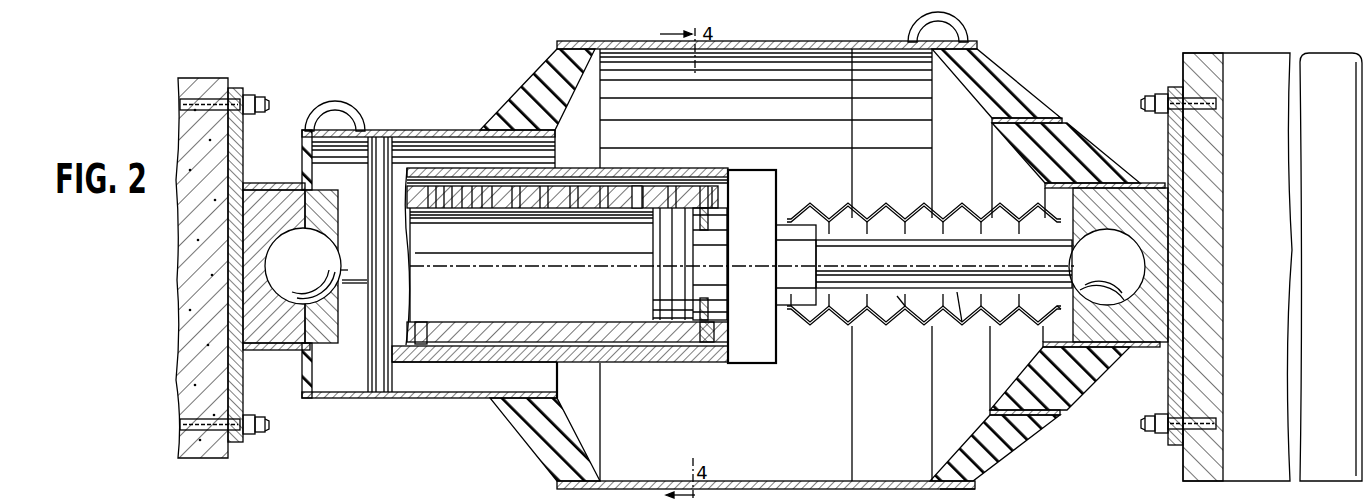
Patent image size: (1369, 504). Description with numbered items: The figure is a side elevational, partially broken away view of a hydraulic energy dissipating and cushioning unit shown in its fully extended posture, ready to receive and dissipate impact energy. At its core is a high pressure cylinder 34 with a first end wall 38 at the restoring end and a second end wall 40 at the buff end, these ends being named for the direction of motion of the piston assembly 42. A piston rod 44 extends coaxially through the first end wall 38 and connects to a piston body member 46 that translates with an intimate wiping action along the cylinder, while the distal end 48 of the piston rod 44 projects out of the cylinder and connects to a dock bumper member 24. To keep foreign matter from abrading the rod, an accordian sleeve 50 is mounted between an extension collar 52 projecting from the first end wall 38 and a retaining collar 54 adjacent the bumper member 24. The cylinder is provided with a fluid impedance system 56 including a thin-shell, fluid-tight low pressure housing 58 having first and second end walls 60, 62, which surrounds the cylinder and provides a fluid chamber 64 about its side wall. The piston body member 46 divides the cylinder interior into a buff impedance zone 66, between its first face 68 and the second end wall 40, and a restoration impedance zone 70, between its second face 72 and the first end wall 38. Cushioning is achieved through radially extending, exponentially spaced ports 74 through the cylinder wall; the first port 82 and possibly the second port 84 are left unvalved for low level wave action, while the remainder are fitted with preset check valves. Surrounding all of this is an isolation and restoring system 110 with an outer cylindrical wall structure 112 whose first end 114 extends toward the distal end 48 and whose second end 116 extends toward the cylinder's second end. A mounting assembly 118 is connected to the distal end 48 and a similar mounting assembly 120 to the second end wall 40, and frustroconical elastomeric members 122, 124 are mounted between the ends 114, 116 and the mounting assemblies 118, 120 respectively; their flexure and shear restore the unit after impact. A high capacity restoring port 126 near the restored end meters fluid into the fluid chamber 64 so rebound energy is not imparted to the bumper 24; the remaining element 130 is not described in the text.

The dock bumper member 24 is at (1318, 165).
The high pressure cylinder 34 is at (672, 346).
The first end wall 38 is at (776, 330).
The second end wall 40 is at (386, 336).
The piston assembly 42 is at (897, 296).
The piston rod 44 is at (957, 292).
The piston body member 46 is at (660, 303).
The distal end of piston rod 48 is at (1063, 313).
The accordian sleeve 50 is at (955, 206).
The extension collar 52 is at (812, 318).
The retaining collar 54 is at (1063, 340).
The fluid impedance system 56 is at (612, 165).
The low pressure housing 58 is at (564, 167).
The first end wall of housing 60 is at (780, 186).
The second end wall of housing 62 is at (305, 170).
The fluid chamber 64 is at (607, 348).
The buff impedance zone 66 is at (427, 288).
The first face of piston body 68 is at (655, 270).
The restoration impedance zone 70 is at (712, 187).
The second face of piston body 72 is at (708, 262).
The ports 74 is at (650, 218).
The first port 82 is at (636, 188).
The second port 84 is at (597, 188).
The isolation and restoring system 110 is at (995, 478).
The outer cylindrical wall structure 112 is at (963, 488).
The first end of outer wall 114 is at (968, 46).
The second end of outer wall 116 is at (557, 483).
The mounting assembly 118 is at (1155, 183).
The mounting assembly 120 is at (436, 400).
The frustroconical elastomeric member 122 is at (1080, 140).
The frustroconical elastomeric member 124 is at (527, 83).
The restoring port 126 is at (714, 335).
The lower support 130 is at (950, 496).